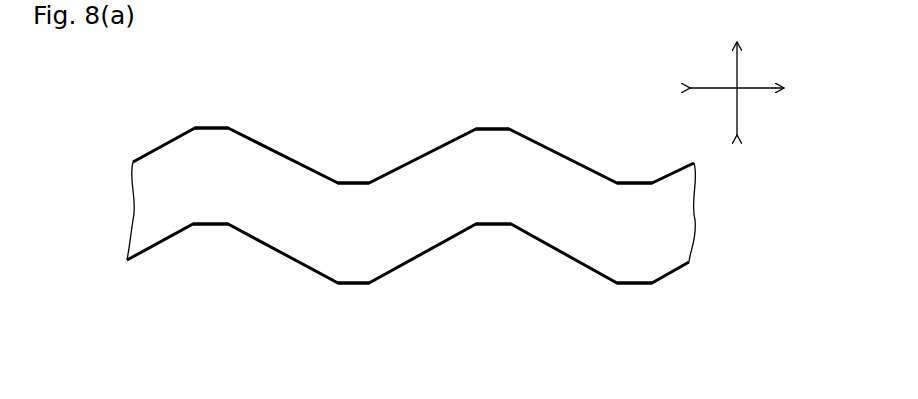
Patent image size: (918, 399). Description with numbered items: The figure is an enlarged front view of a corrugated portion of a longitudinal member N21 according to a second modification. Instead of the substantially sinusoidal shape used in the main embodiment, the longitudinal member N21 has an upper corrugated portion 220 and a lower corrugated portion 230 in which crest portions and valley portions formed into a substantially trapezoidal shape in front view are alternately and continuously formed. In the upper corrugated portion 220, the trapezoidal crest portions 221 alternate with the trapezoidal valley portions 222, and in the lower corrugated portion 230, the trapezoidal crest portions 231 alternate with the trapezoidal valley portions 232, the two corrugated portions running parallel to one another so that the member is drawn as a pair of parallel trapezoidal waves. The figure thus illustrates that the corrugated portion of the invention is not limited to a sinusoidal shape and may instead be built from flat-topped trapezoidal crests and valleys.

The longitudinal member N21 is at (419, 205).
The upper corrugated portion 220 is at (145, 115).
The crest portion 221 is at (212, 128).
The valley portion 222 is at (350, 183).
The lower corrugated portion 230 is at (148, 280).
The crest portion 231 is at (352, 285).
The valley portion 232 is at (212, 226).